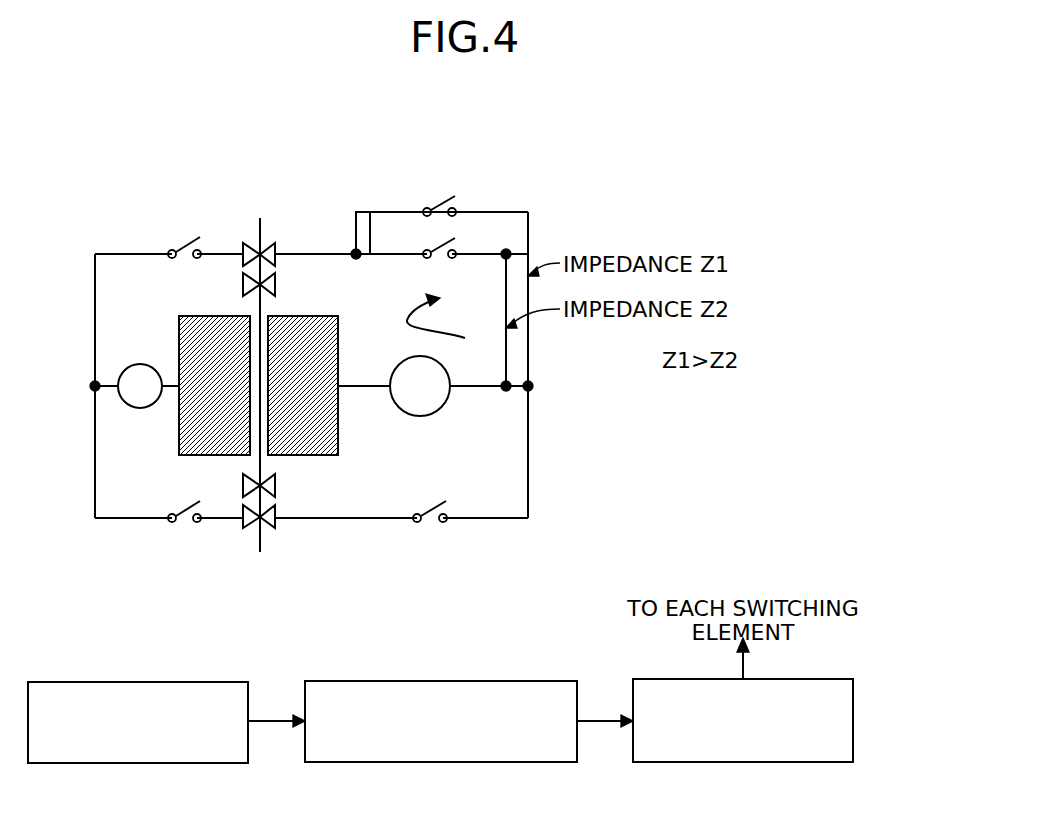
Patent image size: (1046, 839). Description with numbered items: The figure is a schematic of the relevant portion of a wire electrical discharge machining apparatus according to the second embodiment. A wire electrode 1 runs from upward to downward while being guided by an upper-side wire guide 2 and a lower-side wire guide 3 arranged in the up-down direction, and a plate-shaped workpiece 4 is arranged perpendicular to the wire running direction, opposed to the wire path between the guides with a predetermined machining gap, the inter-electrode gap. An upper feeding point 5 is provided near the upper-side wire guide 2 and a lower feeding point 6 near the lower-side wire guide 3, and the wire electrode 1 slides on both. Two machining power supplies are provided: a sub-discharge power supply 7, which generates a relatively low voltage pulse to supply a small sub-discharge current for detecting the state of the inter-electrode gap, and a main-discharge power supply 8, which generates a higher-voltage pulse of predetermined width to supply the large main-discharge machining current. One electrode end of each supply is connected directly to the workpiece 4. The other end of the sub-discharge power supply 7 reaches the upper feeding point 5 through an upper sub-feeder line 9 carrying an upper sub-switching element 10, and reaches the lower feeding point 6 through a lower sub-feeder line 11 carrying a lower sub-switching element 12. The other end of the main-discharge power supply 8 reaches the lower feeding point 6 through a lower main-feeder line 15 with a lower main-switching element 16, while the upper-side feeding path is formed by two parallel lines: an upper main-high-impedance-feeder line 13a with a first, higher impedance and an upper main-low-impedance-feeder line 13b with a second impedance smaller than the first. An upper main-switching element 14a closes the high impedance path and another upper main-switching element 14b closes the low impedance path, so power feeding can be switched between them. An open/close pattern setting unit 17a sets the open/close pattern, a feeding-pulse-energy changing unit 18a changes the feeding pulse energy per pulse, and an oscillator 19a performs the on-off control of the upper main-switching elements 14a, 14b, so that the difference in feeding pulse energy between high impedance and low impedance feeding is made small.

The wire electrode 1 is at (262, 228).
The upper-side wire guide 2 is at (277, 288).
The lower-side wire guide 3 is at (277, 483).
The workpiece 4 is at (340, 440).
The upper feeding point 5 is at (277, 252).
The lower feeding point 6 is at (277, 525).
The sub-discharge power supply 7 is at (140, 408).
The main-discharge power supply 8 is at (428, 416).
The upper sub-feeder line 9 is at (113, 254).
The upper sub-switching element 10 is at (188, 242).
The lower sub-feeder line 11 is at (113, 518).
The lower sub-switching element 12 is at (177, 522).
The upper main-high-impedance-feeder line 13a is at (410, 212).
The upper main-low-impedance-feeder line 13b is at (370, 212).
The upper main-switching element 14a is at (441, 210).
The upper main-switching element 14b is at (437, 254).
The lower main-feeder line 15 is at (347, 518).
The lower main-switching element 16 is at (418, 522).
The open/close pattern setting unit 17a is at (202, 763).
The feeding-pulse-energy changing unit 18a is at (520, 762).
The oscillator 19a is at (816, 762).